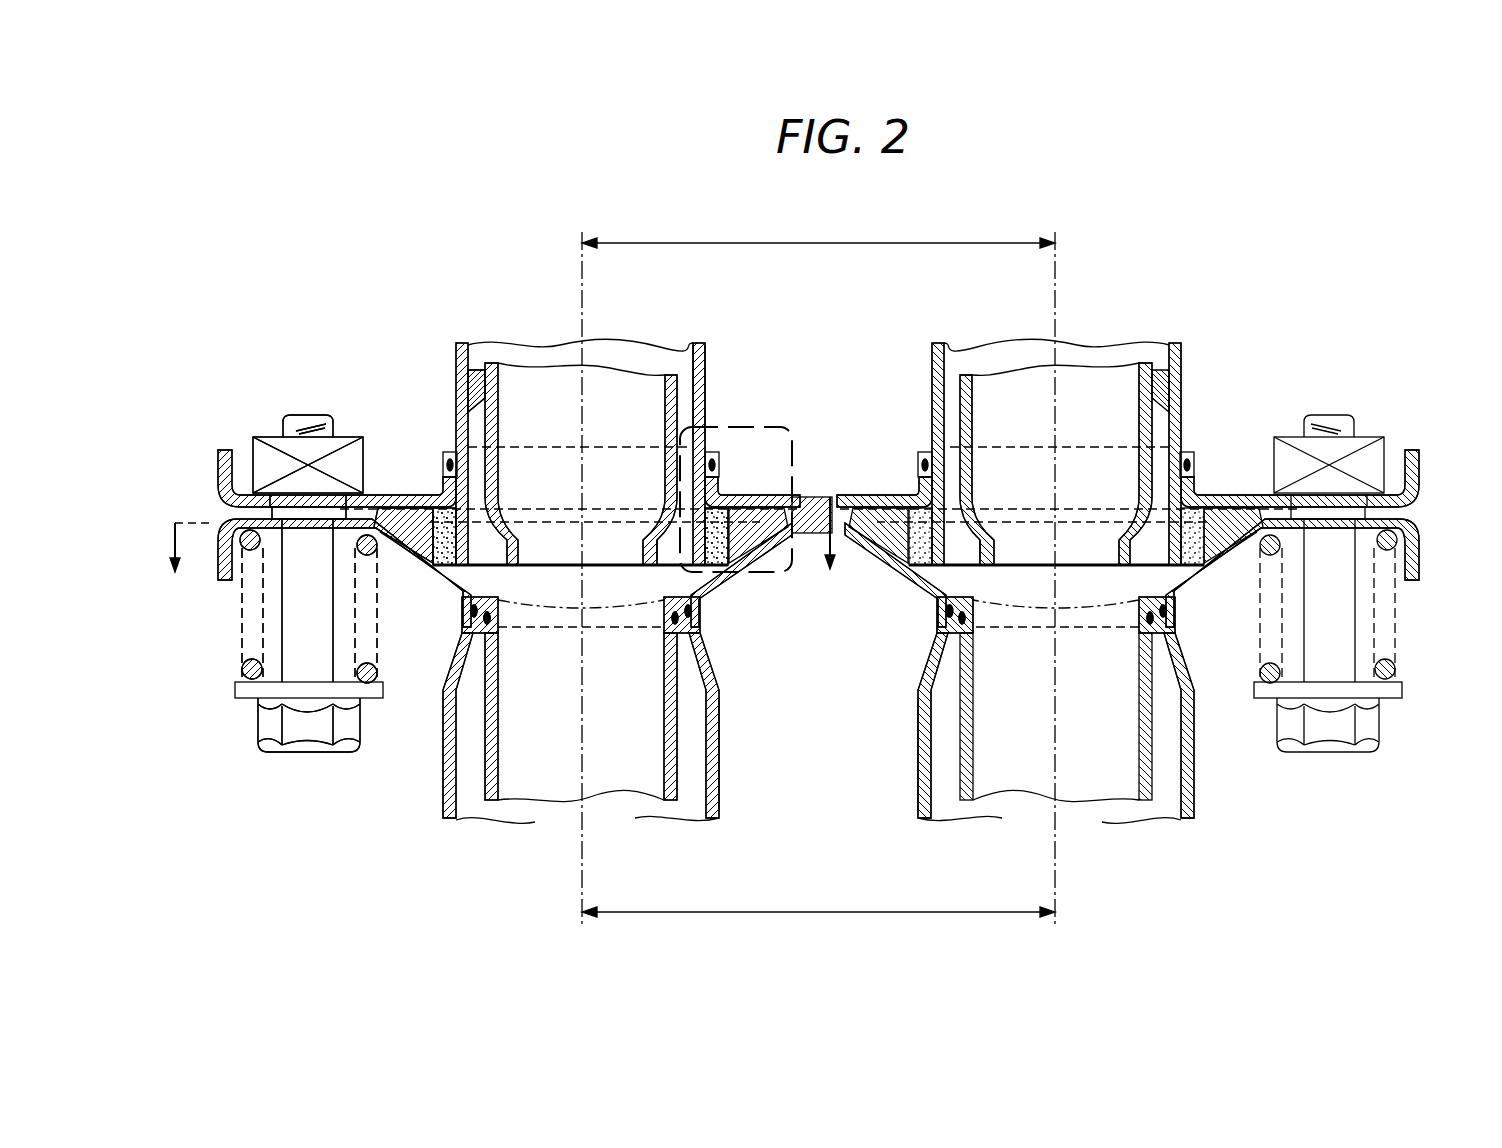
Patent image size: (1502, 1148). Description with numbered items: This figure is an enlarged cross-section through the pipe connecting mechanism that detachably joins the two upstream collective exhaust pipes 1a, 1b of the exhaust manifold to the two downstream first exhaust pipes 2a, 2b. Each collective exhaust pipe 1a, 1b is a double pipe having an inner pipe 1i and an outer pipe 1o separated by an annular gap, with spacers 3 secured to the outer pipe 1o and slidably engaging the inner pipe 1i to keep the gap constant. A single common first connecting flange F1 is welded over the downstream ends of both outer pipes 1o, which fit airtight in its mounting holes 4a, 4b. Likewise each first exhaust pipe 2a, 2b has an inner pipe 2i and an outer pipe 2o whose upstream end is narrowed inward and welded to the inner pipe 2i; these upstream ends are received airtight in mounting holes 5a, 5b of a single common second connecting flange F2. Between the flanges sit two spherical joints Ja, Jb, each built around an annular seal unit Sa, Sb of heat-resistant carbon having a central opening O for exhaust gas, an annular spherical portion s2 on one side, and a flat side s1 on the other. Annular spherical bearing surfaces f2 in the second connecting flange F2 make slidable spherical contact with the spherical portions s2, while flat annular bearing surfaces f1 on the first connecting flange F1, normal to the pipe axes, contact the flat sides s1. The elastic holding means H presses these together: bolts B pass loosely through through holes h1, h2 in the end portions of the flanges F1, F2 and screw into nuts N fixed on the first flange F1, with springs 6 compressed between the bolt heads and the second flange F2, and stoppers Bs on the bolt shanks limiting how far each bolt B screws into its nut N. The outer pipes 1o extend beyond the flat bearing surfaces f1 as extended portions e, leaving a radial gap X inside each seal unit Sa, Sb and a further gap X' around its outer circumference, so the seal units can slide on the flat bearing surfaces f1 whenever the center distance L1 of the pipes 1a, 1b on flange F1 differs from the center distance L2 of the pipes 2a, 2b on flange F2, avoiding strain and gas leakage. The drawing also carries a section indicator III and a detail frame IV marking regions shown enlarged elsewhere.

The collective exhaust pipe 1a is at (458, 350).
The collective exhaust pipe 1b is at (1180, 350).
The inner pipe 1i is at (693, 362).
The outer pipe 1o is at (709, 372).
The first exhaust pipe 2a is at (445, 788).
The first exhaust pipe 2b is at (1193, 782).
The inner pipe 2i is at (674, 800).
The outer pipe 2o is at (719, 810).
The spacer 3 is at (476, 385).
The mounting hole 4a is at (668, 442).
The mounting hole 4b is at (972, 462).
The mounting hole 5a is at (668, 632).
The mounting hole 5b is at (970, 632).
The spring 6 is at (243, 665).
The bolt B is at (303, 752).
The nut N is at (262, 455).
The elastic holding means H is at (248, 728).
The stopper Bs is at (270, 512).
The first connecting flange F1 is at (1420, 460).
The second connecting flange F2 is at (1420, 540).
The flat annular bearing surface f1 is at (412, 497).
The annular spherical bearing surface f2 is at (447, 574).
The flat side s1 is at (424, 515).
The annular spherical portion s2 is at (405, 545).
The through hole h1 is at (297, 505).
The through hole h2 is at (262, 555).
The extended portion e is at (661, 540).
The radial gap X is at (811, 515).
The gap X' is at (1066, 447).
The spherical joint Ja is at (750, 500).
The spherical joint Jb is at (885, 500).
The annular seal unit Sa is at (756, 570).
The annular seal unit Sb is at (882, 568).
The central opening O is at (490, 612).
The distance between centers of mounting positions of collective exhaust pipes L1 is at (818, 230).
The distance between centers of mounting positions of first exhaust pipes L2 is at (818, 898).
The section III is at (502, 557).
The detail IV is at (785, 428).